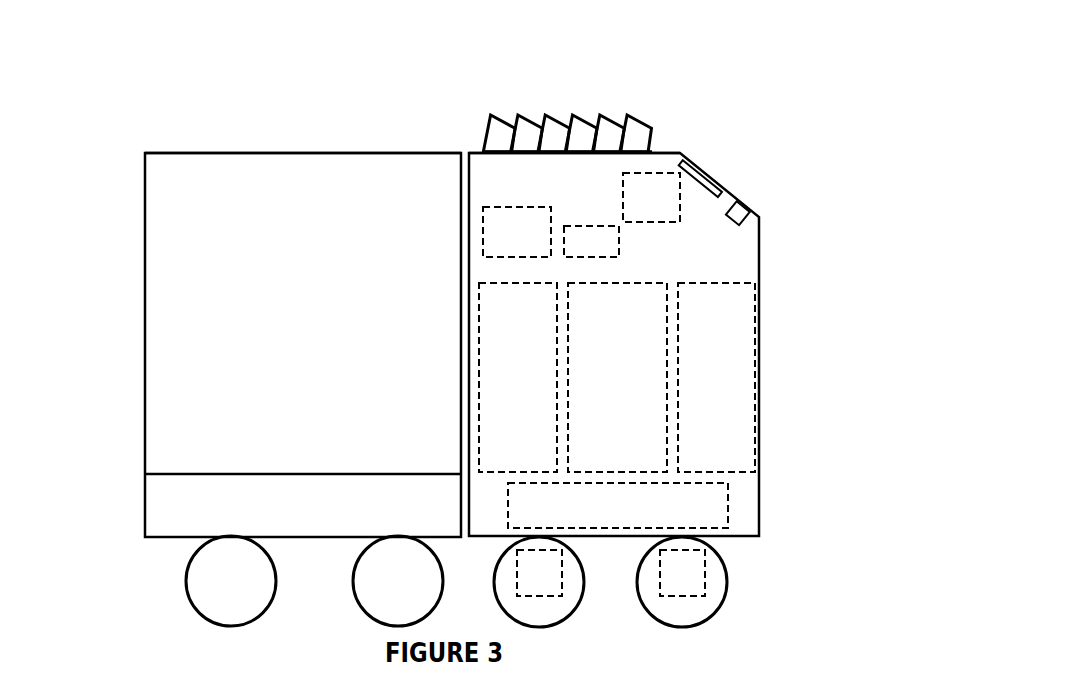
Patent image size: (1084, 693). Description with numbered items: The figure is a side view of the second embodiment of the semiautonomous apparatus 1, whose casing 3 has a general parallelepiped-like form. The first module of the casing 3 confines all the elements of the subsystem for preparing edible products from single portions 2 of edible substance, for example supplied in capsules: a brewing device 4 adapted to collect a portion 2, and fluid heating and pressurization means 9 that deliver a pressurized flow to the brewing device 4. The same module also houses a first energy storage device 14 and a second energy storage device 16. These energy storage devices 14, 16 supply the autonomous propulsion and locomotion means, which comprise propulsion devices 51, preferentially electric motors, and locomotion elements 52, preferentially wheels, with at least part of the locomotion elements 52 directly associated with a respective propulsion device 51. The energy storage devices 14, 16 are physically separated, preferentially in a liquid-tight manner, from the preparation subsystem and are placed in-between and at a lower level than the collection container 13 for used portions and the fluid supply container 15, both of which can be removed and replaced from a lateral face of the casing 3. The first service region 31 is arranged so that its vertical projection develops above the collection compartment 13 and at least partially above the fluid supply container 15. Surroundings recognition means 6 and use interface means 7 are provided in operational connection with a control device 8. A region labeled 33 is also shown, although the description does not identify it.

The semiautonomous apparatus 1 is at (413, 354).
The portion of edible substance 2 is at (614, 311).
The casing 3 is at (303, 308).
The brewing device 4 is at (651, 197).
The surroundings recognition means 6 is at (765, 199).
The use interface means 7 is at (716, 158).
The control device 8 is at (591, 227).
The fluid heating and pressurization means 9 is at (517, 216).
The collection container for used portions 13 is at (716, 377).
The first energy storage device 14 is at (617, 377).
The fluid supply container 15 is at (518, 377).
The second energy storage device 16 is at (618, 505).
The first service region 31 is at (567, 114).
The roof panel 33 is at (436, 183).
The propulsion device 51 is at (542, 578).
The locomotion elements 52 is at (479, 581).